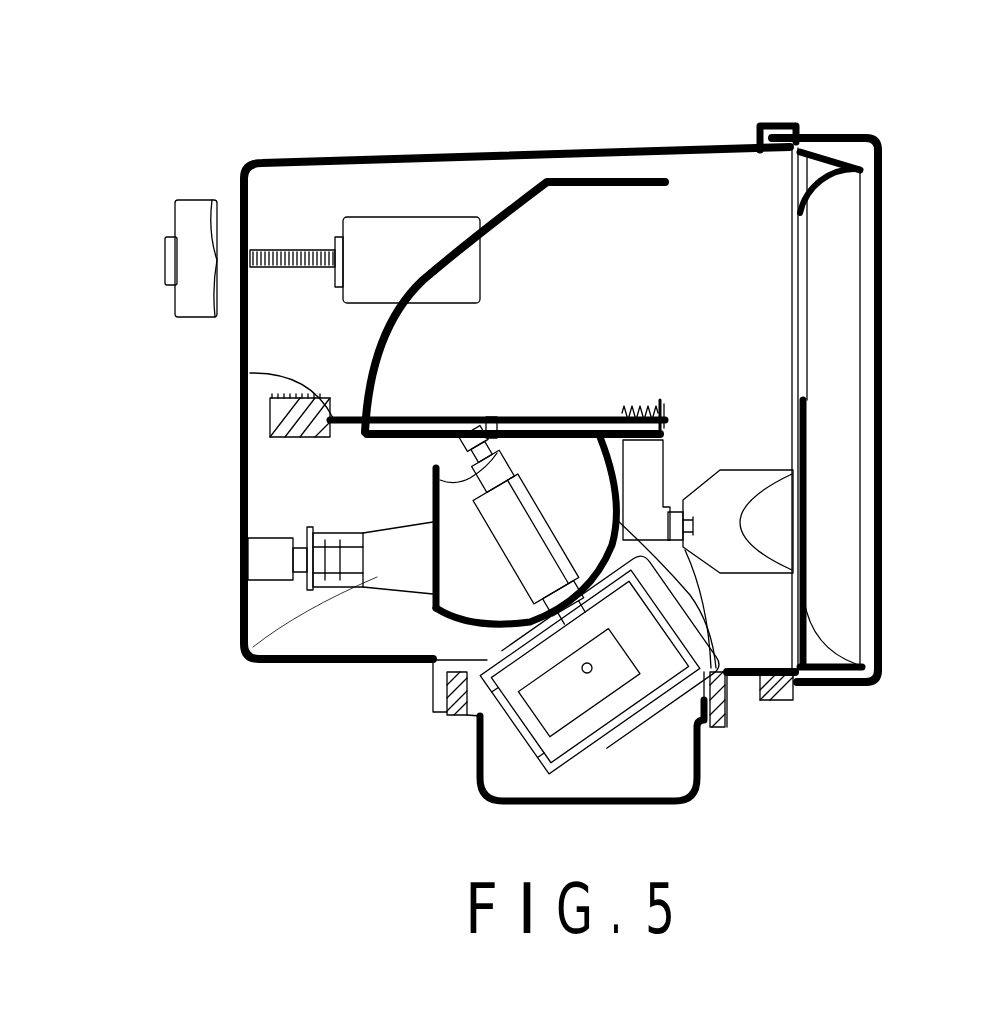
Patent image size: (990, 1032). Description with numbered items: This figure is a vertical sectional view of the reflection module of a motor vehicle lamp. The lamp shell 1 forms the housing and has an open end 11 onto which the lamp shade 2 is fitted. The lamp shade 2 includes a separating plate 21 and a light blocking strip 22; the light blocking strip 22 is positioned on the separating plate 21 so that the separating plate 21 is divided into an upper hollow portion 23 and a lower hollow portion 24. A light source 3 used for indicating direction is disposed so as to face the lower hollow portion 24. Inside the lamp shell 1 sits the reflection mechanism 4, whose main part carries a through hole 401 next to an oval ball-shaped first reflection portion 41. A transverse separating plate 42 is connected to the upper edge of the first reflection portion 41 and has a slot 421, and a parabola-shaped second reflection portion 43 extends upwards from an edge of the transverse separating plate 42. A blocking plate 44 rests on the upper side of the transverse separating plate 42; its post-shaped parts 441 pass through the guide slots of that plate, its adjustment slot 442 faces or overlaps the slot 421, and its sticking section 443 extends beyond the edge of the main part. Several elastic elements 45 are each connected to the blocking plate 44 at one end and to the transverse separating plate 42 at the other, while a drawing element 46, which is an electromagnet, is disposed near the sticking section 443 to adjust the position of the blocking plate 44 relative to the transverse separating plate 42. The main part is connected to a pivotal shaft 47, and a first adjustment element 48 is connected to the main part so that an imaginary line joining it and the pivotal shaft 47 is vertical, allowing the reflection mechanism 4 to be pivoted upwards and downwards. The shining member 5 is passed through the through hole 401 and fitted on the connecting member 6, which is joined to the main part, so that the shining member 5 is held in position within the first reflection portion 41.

The lamp shell 1 is at (324, 153).
The open end 11 is at (800, 133).
The lamp shade 2 is at (878, 165).
The separating plate 21 is at (833, 670).
The light blocking strip 22 is at (808, 434).
The upper hollow portion 23 is at (805, 323).
The lower hollow portion 24 is at (805, 558).
The light source 3 is at (742, 562).
The reflection mechanism 4 is at (343, 465).
The through hole 401 is at (447, 725).
The first reflection portion 41 is at (720, 723).
The transverse separating plate 42 is at (660, 454).
The slot 421 is at (432, 440).
The second reflection portion 43 is at (530, 205).
The blocking plate 44 is at (412, 418).
The post-shaped parts 441 is at (505, 427).
The adjustment slot 442 is at (465, 425).
The sticking section 443 is at (248, 377).
The elastic elements 45 is at (645, 405).
The drawing element 46 is at (280, 440).
The pivotal shaft 47 is at (377, 577).
The first adjustment element 48 is at (193, 220).
The shining member 5 is at (515, 548).
The connecting member 6 is at (515, 650).